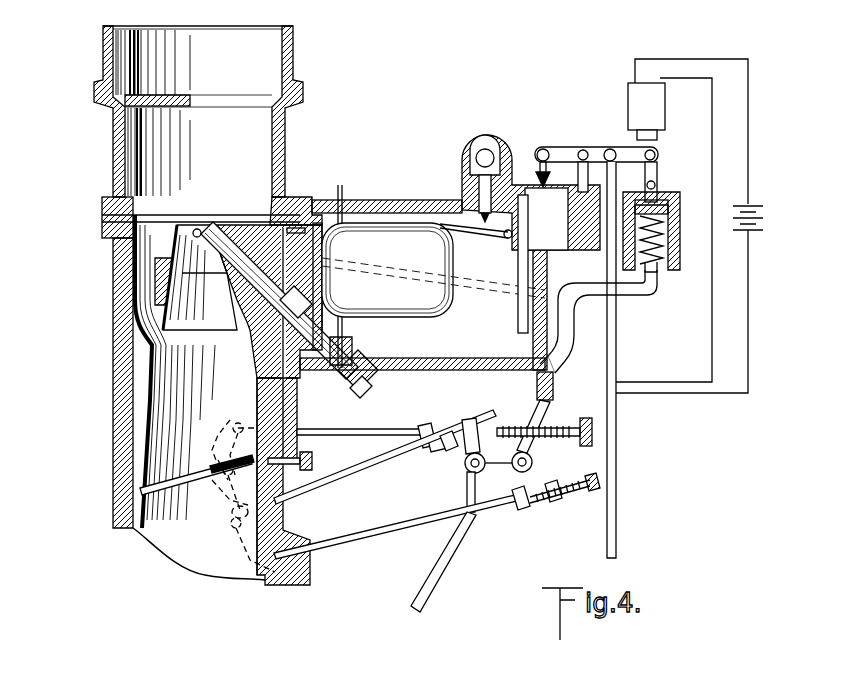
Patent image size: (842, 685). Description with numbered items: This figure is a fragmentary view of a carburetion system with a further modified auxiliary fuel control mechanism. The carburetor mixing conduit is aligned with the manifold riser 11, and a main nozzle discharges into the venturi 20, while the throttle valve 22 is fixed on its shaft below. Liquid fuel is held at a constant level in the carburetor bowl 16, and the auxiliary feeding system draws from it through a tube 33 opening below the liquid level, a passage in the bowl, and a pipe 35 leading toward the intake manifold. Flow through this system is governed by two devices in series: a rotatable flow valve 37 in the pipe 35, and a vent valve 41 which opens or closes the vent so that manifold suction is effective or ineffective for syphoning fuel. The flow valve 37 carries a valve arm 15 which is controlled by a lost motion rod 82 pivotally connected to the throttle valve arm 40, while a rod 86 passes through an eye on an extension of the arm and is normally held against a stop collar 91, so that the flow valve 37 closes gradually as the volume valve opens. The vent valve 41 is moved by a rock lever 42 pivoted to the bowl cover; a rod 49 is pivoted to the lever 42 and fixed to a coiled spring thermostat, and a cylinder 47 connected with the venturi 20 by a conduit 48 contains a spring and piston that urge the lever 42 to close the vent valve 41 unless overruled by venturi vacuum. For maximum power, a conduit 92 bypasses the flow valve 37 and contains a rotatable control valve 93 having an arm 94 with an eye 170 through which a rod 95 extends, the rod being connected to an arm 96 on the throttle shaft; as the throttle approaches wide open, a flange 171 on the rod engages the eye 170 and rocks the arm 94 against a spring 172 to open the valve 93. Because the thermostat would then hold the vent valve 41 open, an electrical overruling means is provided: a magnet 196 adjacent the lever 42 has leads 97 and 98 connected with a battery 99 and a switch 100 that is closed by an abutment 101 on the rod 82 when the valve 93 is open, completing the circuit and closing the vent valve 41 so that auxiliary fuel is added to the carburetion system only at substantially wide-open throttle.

The manifold riser 11 is at (283, 522).
The valve arm 15 is at (535, 447).
The carburetor bowl 16 is at (455, 370).
The venturi 20 is at (205, 228).
The throttle valve 22 is at (240, 446).
The tube 33 is at (521, 326).
The pipe 35 is at (455, 548).
The flow valve 37 is at (532, 465).
The throttle valve arm 40 is at (232, 426).
The vent valve 41 is at (540, 175).
The rock lever 42 is at (596, 145).
The cylinder 47 is at (676, 238).
The conduit 48 is at (598, 288).
The rod 49 is at (617, 452).
The lost motion rod 82 is at (395, 434).
The rod 86 is at (355, 548).
The stop collar 91 is at (522, 512).
The conduit 92 is at (467, 490).
The control valve 93 is at (465, 465).
The arm 94 is at (445, 452).
The rod 95 is at (370, 470).
The arm 96 is at (232, 528).
The lead 97 is at (749, 180).
The lead 98 is at (749, 305).
The battery 99 is at (755, 236).
The switch 100 is at (547, 400).
The abutment 101 is at (586, 446).
The eye 170 is at (470, 418).
The flange 171 is at (428, 424).
The spring 172 is at (430, 446).
The magnet 196 is at (665, 104).